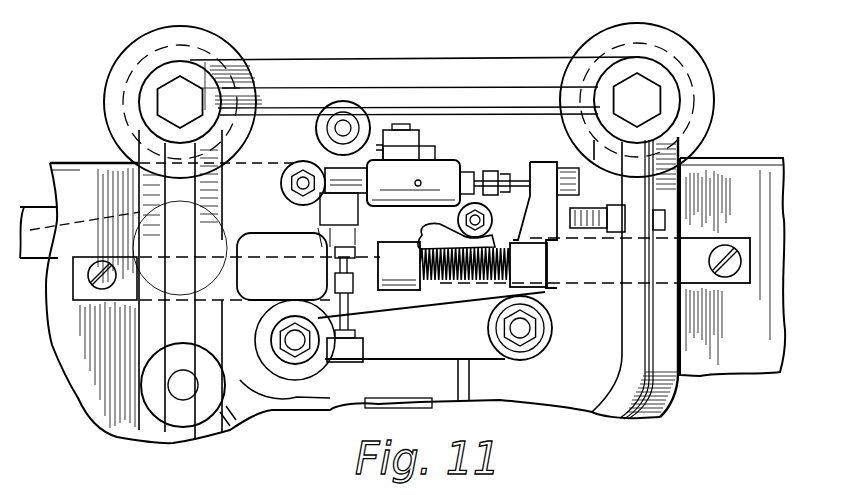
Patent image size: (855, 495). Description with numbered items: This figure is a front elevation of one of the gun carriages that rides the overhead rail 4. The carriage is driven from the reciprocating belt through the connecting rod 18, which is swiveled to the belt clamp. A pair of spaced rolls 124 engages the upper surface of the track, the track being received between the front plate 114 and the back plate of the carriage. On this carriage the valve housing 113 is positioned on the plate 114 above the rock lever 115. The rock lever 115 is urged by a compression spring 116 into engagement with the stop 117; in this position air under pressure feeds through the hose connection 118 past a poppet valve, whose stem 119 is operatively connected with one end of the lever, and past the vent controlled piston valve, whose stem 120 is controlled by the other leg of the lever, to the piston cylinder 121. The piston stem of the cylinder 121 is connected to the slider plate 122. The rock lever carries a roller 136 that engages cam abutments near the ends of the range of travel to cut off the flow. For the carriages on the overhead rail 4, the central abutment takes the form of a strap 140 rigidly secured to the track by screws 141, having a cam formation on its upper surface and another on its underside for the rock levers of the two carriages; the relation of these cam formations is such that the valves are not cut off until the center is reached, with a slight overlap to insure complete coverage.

The overhead rail 4 is at (745, 163).
The connecting rod 18 is at (33, 207).
The valve housing 113 is at (483, 207).
The plate 114 is at (555, 68).
The rock lever 115 is at (385, 359).
The compression spring 116 is at (430, 238).
The stop 117 is at (655, 214).
The hose connection 118 is at (344, 128).
The poppet valve stem 119 is at (338, 268).
The piston valve stem 120 is at (512, 180).
The piston cylinder 121 is at (440, 148).
The slider plate 122 is at (382, 135).
The rolls 124 is at (107, 92).
The roller 136 is at (280, 370).
The strap 140 is at (699, 242).
The screws 141 is at (732, 272).